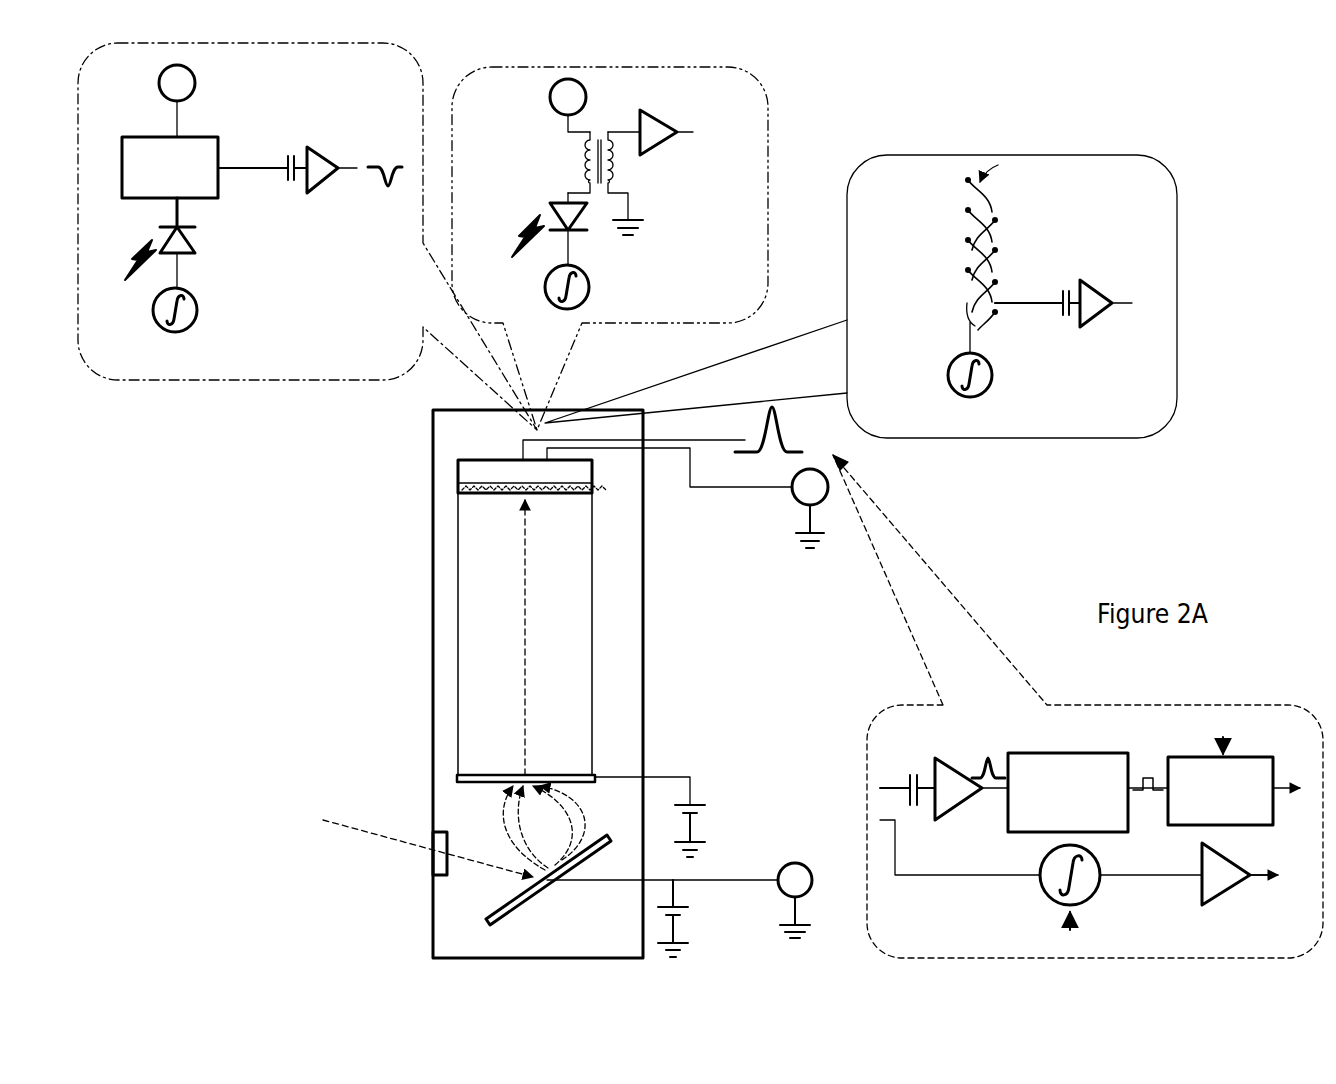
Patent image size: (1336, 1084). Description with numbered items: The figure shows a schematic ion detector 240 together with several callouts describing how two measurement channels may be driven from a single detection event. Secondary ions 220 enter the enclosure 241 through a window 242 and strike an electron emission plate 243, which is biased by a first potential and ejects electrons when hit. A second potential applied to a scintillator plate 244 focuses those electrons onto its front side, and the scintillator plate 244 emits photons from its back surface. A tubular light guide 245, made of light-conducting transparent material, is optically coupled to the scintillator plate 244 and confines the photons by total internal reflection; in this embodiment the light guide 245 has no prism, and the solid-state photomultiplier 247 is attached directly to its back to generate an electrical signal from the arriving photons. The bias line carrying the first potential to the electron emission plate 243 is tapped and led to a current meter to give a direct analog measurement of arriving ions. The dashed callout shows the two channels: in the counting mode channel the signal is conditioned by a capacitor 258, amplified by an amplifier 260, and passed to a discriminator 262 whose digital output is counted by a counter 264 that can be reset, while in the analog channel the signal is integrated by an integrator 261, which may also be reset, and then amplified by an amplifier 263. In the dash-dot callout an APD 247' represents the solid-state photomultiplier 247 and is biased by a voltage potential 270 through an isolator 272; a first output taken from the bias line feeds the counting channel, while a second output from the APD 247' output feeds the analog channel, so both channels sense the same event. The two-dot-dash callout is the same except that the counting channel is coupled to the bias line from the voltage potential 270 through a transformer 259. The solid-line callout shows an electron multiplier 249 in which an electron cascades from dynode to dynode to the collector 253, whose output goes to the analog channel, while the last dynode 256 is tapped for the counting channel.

The ion beam 220 is at (360, 833).
The detector 240 is at (395, 469).
The enclosure 241 is at (433, 530).
The window 242 is at (437, 832).
The electron emission plate 243 is at (522, 905).
The scintillator plate 244 is at (545, 774).
The light guide 245 is at (525, 634).
The solid-state photomultiplier 247 is at (633, 477).
The APD 247' is at (339, 223).
The electron multiplier 249 is at (945, 242).
The collector 253 is at (966, 310).
The last dynode 256 is at (996, 318).
The capacitor 258 is at (288, 158).
The transformer 259 is at (600, 128).
The amplifier 260 is at (318, 160).
The integrator 261 is at (187, 330).
The discriminator 262 is at (1088, 792).
The amplifier 263 is at (1215, 870).
The counter 264 is at (1234, 770).
The voltage potential 270 is at (160, 78).
The isolator 272 is at (170, 167).